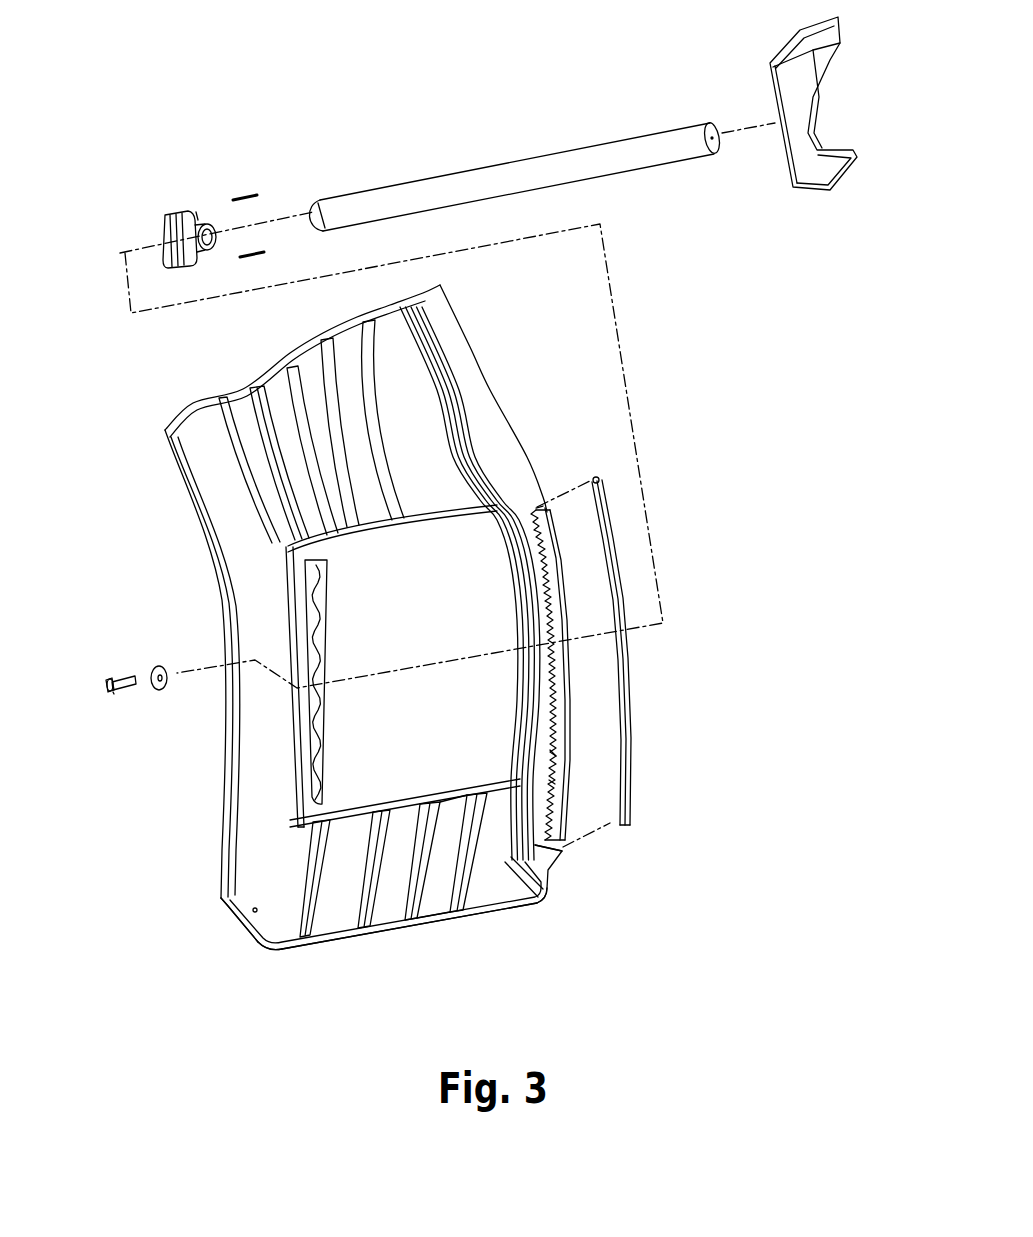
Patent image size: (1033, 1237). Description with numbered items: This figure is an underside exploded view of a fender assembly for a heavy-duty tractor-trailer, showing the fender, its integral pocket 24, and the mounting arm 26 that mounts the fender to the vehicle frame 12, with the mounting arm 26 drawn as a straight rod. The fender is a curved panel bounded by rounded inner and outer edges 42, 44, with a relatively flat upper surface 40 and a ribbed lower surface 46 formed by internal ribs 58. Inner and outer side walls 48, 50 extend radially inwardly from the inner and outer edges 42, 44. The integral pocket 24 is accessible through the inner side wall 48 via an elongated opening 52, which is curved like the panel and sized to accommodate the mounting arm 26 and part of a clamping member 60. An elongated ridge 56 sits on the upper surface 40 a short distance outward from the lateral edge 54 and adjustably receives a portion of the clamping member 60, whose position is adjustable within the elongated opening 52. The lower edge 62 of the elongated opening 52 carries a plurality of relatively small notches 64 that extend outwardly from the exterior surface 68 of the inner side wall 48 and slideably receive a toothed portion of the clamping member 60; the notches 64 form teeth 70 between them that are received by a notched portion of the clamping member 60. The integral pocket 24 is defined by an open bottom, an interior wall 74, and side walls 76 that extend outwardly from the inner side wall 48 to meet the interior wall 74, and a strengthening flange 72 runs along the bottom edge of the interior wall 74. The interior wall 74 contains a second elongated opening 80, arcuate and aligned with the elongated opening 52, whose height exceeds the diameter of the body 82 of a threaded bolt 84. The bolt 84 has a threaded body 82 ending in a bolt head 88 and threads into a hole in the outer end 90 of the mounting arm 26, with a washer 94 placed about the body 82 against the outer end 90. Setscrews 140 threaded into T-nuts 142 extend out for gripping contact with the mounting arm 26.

The frame 12 is at (770, 83).
The integral pocket 24 is at (455, 593).
The mounting arm 26 is at (480, 173).
The outer end 90 is at (313, 213).
The clamping member 60 is at (158, 220).
The setscrew 140 is at (200, 190).
The T-nut 142 is at (243, 214).
The internal ribs 58 is at (397, 370).
The side walls 76 is at (417, 507).
The lateral edge 54 is at (547, 525).
The elongated ridge 56 is at (627, 684).
The elongated opening 52 is at (565, 703).
The notches 64 is at (568, 753).
The teeth 70 is at (563, 784).
The lower edge 62 is at (562, 833).
The inner side wall 48 is at (546, 865).
The exterior surface 68 is at (548, 876).
The inner edge 42 is at (547, 905).
The upper surface 40 is at (463, 918).
The lower surface 46 is at (427, 893).
The outer edge 44 is at (262, 946).
The outer side wall 50 is at (235, 920).
The strengthening flange 72 is at (307, 778).
The interior wall 74 is at (288, 548).
The second elongated opening 80 is at (323, 603).
The washer 94 is at (164, 665).
The body 82 is at (124, 672).
The bolt head 88 is at (105, 678).
The threaded bolt 84 is at (115, 696).